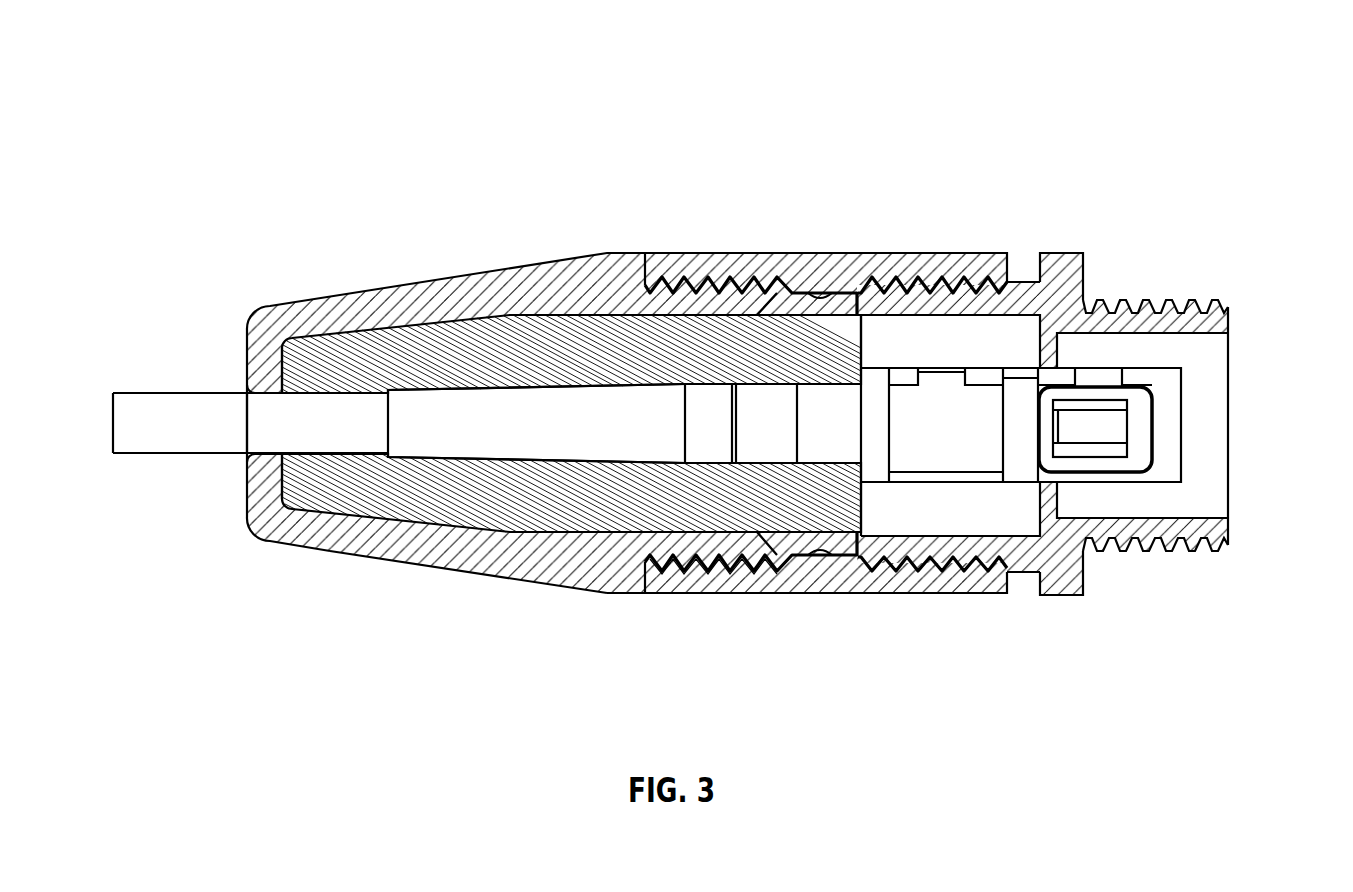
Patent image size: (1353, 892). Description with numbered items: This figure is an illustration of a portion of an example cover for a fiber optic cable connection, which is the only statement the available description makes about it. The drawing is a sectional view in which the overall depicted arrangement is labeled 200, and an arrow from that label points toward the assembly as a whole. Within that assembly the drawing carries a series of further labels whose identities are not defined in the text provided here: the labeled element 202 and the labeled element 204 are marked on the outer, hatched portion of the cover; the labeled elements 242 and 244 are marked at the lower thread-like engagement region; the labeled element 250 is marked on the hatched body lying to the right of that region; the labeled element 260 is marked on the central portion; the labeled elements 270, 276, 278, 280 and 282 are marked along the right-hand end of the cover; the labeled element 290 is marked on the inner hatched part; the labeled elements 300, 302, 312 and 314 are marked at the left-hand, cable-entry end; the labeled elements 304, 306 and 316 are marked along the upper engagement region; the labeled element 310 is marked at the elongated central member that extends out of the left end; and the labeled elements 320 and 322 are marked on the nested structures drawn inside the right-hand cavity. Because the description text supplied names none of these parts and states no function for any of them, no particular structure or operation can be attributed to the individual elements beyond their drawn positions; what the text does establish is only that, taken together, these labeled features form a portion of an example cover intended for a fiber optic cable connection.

The connector assembly 200 is at (230, 114).
The coupling nut 202 is at (528, 275).
The nut body 204 is at (497, 550).
The internal threads of nut 242 is at (733, 567).
The external threads of insulator 244 is at (690, 563).
The connector body 250 is at (803, 578).
The contact pin 260 is at (738, 285).
The flange 270 is at (1060, 585).
The shoulder 276 is at (855, 582).
The front threaded end 278 is at (1218, 530).
The threads 280 is at (978, 565).
The external threads 282 is at (1145, 551).
The strain relief body 290 is at (570, 495).
The rear end of nut 300 is at (365, 515).
The cable opening 302 is at (247, 480).
The threads 304 is at (683, 285).
The threads 306 is at (909, 285).
The cable 310 is at (463, 387).
The outer surface 312 is at (437, 527).
The sleeve 314 is at (343, 390).
The gap 316 is at (826, 293).
The connector insert 320 is at (930, 481).
The contact 322 is at (1103, 388).